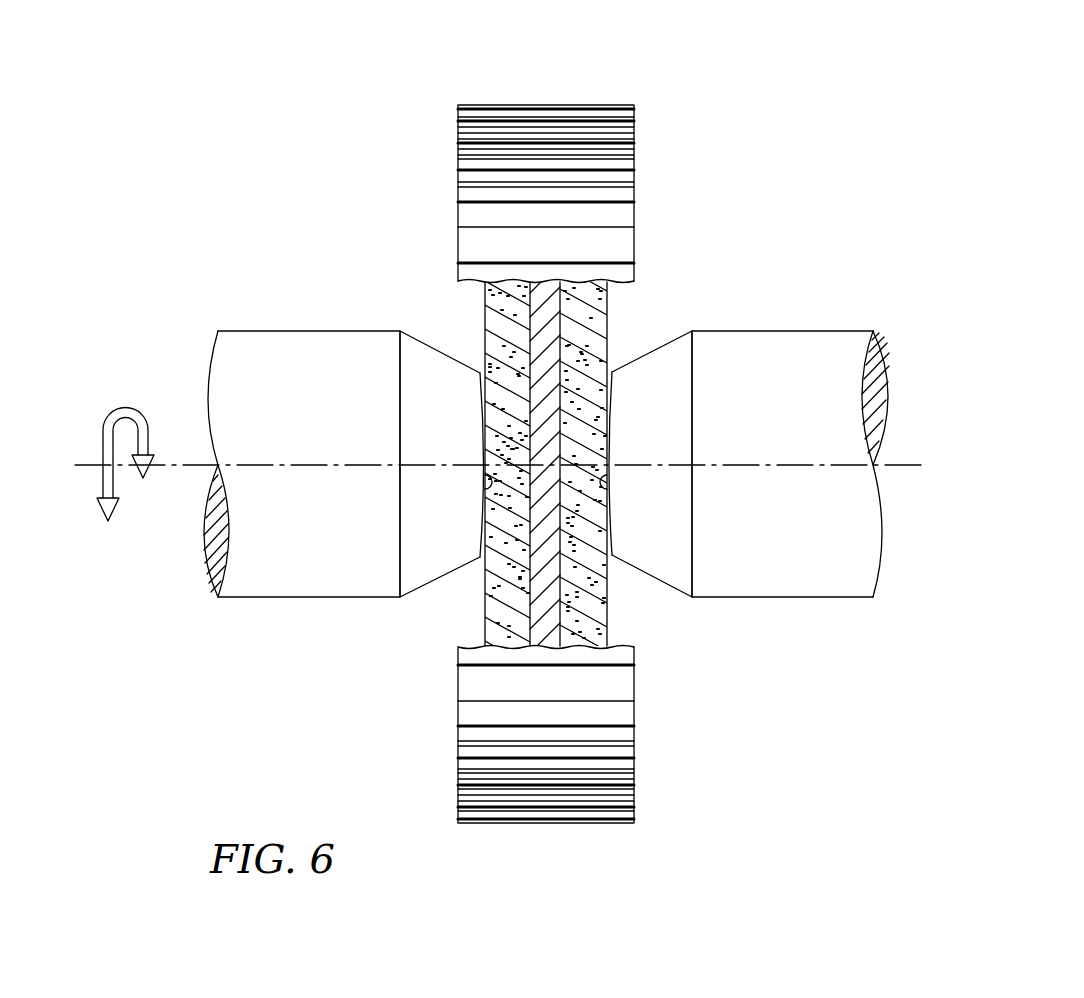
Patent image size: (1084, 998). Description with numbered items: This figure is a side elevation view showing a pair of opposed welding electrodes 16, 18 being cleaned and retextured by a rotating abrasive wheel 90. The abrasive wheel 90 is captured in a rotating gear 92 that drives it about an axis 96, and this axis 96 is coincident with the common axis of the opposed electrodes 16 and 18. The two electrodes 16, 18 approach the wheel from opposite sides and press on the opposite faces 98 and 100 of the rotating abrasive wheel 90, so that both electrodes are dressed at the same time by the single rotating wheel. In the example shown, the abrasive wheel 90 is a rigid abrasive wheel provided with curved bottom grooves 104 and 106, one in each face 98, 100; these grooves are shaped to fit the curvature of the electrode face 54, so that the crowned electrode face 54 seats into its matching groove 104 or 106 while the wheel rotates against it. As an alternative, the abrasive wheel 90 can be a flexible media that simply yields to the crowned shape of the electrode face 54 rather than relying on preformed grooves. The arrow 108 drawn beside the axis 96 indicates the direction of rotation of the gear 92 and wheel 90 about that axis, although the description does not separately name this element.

The electrode 16 is at (344, 414).
The electrode 18 is at (749, 414).
The electrode face 54 is at (492, 492).
The rotating abrasive wheel 90 is at (554, 455).
The rotating gear 92 is at (537, 126).
The axis 96 is at (189, 465).
The face of abrasive wheel 98 is at (483, 338).
The face of abrasive wheel 100 is at (607, 338).
The curved bottom groove 104 is at (482, 448).
The curved bottom groove 106 is at (612, 440).
The rotation direction 108 is at (113, 435).